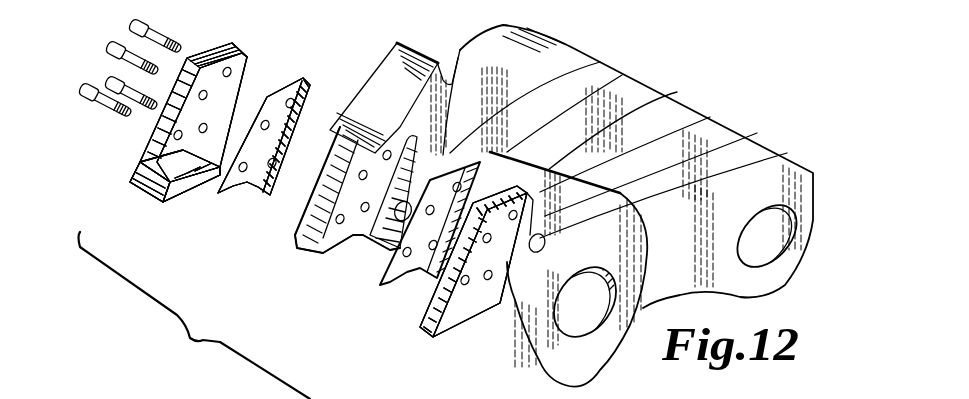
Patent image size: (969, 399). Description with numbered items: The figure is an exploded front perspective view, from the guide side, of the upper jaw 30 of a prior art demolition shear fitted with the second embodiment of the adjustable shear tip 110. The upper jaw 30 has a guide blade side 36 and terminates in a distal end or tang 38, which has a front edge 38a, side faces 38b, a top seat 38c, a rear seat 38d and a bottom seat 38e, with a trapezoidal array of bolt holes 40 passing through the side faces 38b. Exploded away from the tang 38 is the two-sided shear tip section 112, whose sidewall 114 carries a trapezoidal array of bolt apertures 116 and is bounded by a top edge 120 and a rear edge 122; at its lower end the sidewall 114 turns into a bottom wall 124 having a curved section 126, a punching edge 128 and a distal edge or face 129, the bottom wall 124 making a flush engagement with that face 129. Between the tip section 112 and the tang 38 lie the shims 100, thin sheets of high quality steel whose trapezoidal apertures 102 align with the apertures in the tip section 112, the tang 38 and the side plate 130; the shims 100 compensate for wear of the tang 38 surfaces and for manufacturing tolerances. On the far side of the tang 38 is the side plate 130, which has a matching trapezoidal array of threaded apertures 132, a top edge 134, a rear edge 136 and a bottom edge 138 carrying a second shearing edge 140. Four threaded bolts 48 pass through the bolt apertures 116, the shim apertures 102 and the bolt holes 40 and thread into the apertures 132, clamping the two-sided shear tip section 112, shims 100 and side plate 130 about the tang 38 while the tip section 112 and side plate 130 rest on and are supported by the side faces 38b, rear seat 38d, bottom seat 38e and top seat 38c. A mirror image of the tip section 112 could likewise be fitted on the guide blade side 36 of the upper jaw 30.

The upper jaw 30 is at (563, 72).
The guide blade side 36 is at (460, 55).
The tang 38 is at (330, 135).
The front edge 38a is at (317, 190).
The side faces 38b is at (328, 256).
The top seat 38c is at (291, 197).
The rear seat 38d is at (540, 238).
The bottom seat 38e is at (407, 257).
The bolt holes 40 is at (341, 224).
The threaded bolts 48 is at (100, 42).
The shims 100 is at (303, 80).
The trapezoidal apertures 102 is at (297, 68).
The adjustable shear tip 110 is at (247, 52).
The two-sided shear tip section 112 is at (215, 105).
The sidewall 114 is at (143, 131).
The bolt apertures 116 is at (232, 71).
The top edge 120 is at (207, 60).
The rear edge 122 is at (233, 115).
The bottom wall 124 is at (172, 188).
The curved section 126 is at (195, 195).
The punching edge 128 is at (147, 192).
The distal edge or face 129 is at (172, 200).
The side plate 130 is at (710, 117).
The threaded apertures 132 is at (757, 133).
The top edge 134 is at (677, 92).
The rear edge 136 is at (787, 153).
The bottom edge 138 is at (450, 338).
The second shearing edge 140 is at (473, 287).